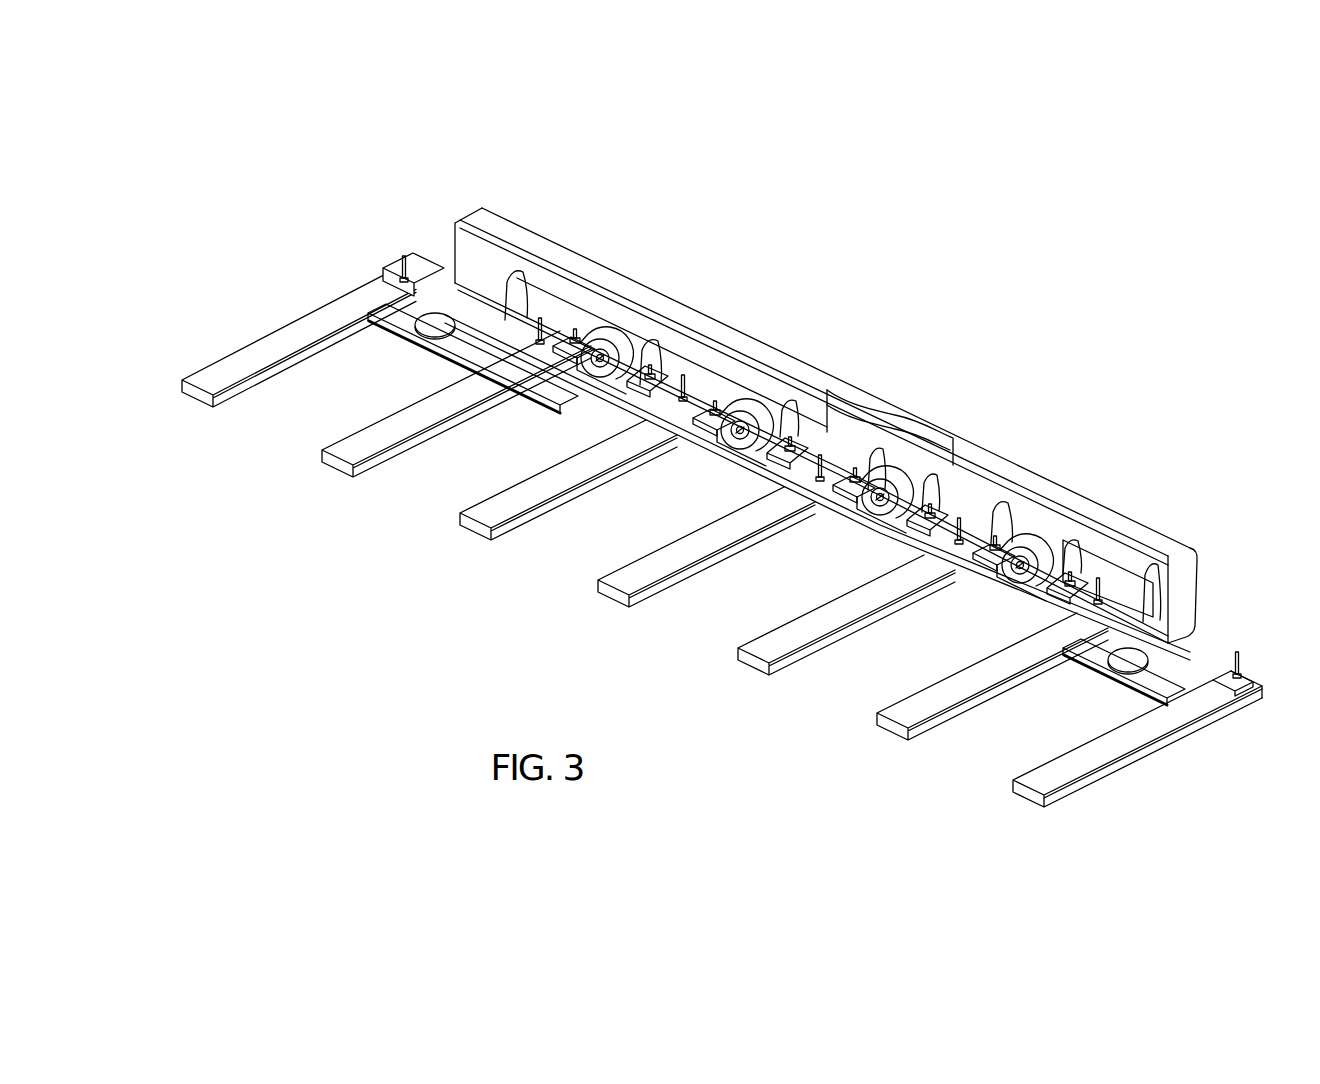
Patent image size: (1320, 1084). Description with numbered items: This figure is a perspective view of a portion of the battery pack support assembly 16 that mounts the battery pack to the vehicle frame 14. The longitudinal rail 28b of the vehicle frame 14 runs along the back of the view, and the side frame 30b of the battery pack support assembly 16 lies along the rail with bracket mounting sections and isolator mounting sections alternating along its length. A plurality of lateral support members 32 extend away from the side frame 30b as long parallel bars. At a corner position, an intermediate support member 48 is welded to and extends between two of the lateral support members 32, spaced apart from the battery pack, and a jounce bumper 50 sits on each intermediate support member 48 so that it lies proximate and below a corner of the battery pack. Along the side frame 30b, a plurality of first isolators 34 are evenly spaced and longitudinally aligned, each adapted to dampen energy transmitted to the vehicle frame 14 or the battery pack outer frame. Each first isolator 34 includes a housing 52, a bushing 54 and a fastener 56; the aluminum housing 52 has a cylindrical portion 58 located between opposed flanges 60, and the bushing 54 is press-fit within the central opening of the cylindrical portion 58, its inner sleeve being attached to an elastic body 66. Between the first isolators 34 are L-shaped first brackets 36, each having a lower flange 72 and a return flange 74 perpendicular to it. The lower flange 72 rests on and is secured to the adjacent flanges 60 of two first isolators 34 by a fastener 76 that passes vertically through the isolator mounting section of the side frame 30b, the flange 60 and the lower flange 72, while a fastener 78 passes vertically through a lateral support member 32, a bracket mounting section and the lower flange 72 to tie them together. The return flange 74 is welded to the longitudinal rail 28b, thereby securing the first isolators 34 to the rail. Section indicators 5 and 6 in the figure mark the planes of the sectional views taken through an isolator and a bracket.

The vehicle frame 14 is at (1203, 537).
The battery pack support assembly 16 is at (1158, 833).
The longitudinal rail 28b is at (1053, 487).
The side frame 30b is at (432, 284).
The lateral support member 32 is at (192, 395).
The first isolator 34 is at (631, 335).
The first bracket 36 is at (563, 312).
The intermediate support member 48 is at (392, 320).
The jounce bumper 50 is at (433, 334).
The housing 52 is at (578, 405).
The bushing 54 is at (560, 392).
The fastener 56 is at (598, 372).
The cylindrical portion 58 is at (610, 340).
The flange 60 is at (430, 290).
The elastic body 66 is at (603, 345).
The lower flange 72 is at (522, 300).
The return flange 74 is at (558, 333).
The fastener 76 is at (850, 478).
The fastener 78 is at (555, 318).
The section line 5 is at (1125, 512).
The section line 6 is at (1168, 535).